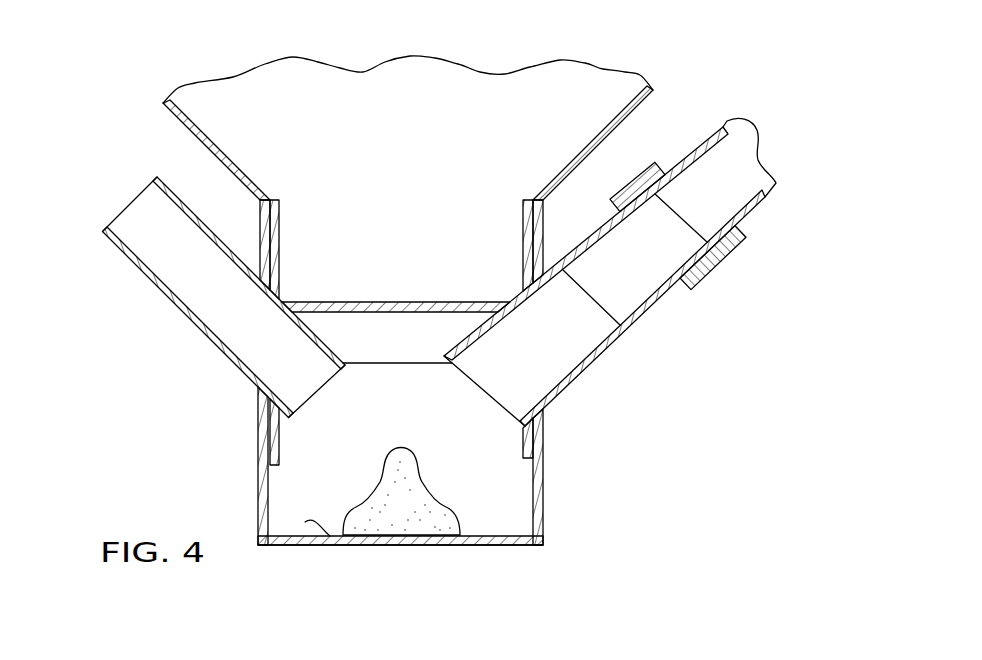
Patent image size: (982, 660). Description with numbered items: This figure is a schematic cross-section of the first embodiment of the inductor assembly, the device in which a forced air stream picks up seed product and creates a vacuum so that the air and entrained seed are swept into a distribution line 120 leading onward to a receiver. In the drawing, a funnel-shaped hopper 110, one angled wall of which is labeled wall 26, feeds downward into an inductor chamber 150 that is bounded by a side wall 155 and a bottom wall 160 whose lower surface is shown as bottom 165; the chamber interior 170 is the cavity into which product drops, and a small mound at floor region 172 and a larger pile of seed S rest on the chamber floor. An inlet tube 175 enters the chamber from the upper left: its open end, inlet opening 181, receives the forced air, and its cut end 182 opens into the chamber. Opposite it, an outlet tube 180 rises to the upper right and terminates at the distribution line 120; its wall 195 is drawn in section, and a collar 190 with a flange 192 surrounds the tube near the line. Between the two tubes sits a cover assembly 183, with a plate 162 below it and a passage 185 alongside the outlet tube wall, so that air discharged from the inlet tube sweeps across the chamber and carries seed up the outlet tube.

The hopper wall 26 is at (622, 120).
The hopper 110 is at (184, 125).
The distribution line 120 is at (726, 125).
The chamber 150 is at (432, 500).
The chamber side wall 155 is at (258, 500).
The chamber bottom wall 160 is at (545, 530).
The divider plate 162 is at (428, 362).
The bottom surface 165 is at (400, 548).
The chamber interior 170 is at (490, 465).
The chamber floor 172 is at (305, 522).
The inlet tube 175 is at (227, 283).
The outlet tube 180 is at (644, 236).
The inlet opening 181 is at (125, 206).
The inlet tube end 182 is at (322, 392).
The cover assembly 183 is at (343, 302).
The passage 185 is at (480, 333).
The collar 190 is at (688, 272).
The collar flange 192 is at (733, 232).
The tube wall 195 is at (580, 246).
The seed sample S is at (407, 511).